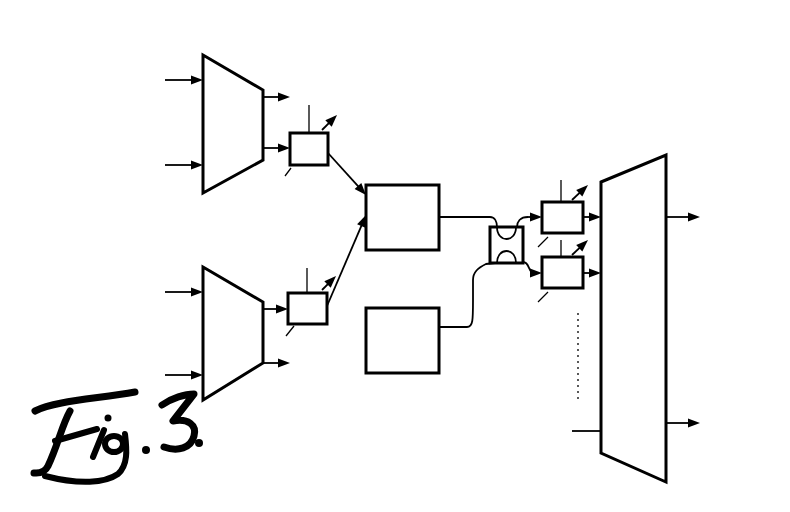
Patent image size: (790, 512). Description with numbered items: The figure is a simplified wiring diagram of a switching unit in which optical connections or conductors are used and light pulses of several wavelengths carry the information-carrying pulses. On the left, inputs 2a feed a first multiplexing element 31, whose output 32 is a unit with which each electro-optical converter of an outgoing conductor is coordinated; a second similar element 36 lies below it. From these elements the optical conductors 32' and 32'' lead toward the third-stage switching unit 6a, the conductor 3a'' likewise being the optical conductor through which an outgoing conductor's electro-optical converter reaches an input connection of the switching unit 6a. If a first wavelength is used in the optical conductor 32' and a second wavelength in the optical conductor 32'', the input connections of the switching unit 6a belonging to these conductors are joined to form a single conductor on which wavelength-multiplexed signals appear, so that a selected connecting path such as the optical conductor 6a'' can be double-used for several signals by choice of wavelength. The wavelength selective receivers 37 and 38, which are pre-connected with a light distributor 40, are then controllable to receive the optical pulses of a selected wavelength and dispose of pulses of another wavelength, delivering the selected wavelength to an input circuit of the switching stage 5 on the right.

The input signals 2a is at (172, 80).
The first multiplexer 31 is at (230, 68).
The unit 32 is at (295, 58).
The optical conductor 32' is at (339, 115).
The optical conductor 32'' is at (326, 319).
The optical conductor 3a'' is at (321, 157).
The second multiplexer 36 is at (240, 280).
The switching unit 6a is at (431, 184).
The optical conductor 6a'' is at (516, 197).
The wavelength selective receiver 37 is at (565, 200).
The wavelength selective receiver 38 is at (560, 290).
The light distributor 40 is at (506, 264).
The switching stage 5 is at (655, 153).